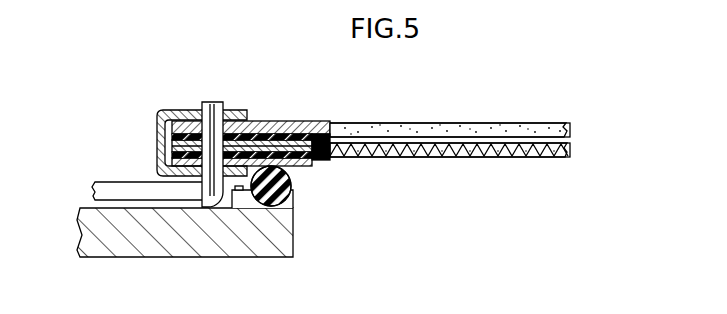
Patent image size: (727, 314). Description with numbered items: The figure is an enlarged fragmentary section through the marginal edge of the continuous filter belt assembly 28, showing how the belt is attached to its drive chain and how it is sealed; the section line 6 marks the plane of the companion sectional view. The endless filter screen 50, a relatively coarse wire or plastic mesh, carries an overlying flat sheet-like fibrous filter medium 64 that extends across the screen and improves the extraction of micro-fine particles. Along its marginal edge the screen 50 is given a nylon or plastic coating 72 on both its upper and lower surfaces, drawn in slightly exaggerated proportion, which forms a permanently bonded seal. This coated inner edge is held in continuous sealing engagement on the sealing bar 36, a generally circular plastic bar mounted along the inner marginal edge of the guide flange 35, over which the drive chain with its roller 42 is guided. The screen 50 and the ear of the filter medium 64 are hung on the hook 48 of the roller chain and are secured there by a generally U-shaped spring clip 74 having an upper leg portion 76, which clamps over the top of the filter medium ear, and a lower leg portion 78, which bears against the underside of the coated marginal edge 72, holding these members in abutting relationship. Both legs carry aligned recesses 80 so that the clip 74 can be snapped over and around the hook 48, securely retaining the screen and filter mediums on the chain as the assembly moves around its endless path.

The section line 6- 6 is at (177, 74).
The continuous filter belt assembly 28 is at (541, 113).
The guide flange 35 is at (272, 246).
The sealing bar 36 is at (294, 200).
The roller 42 is at (93, 186).
The hook 48 is at (223, 112).
The endless filter screen 50 is at (476, 158).
The filter medium 64 is at (457, 123).
The marginal edge coating 72 is at (312, 137).
The spring clip 74 is at (150, 137).
The upper leg portion 76 is at (180, 110).
The lower leg portion 78 is at (180, 176).
The recess 80 is at (203, 111).